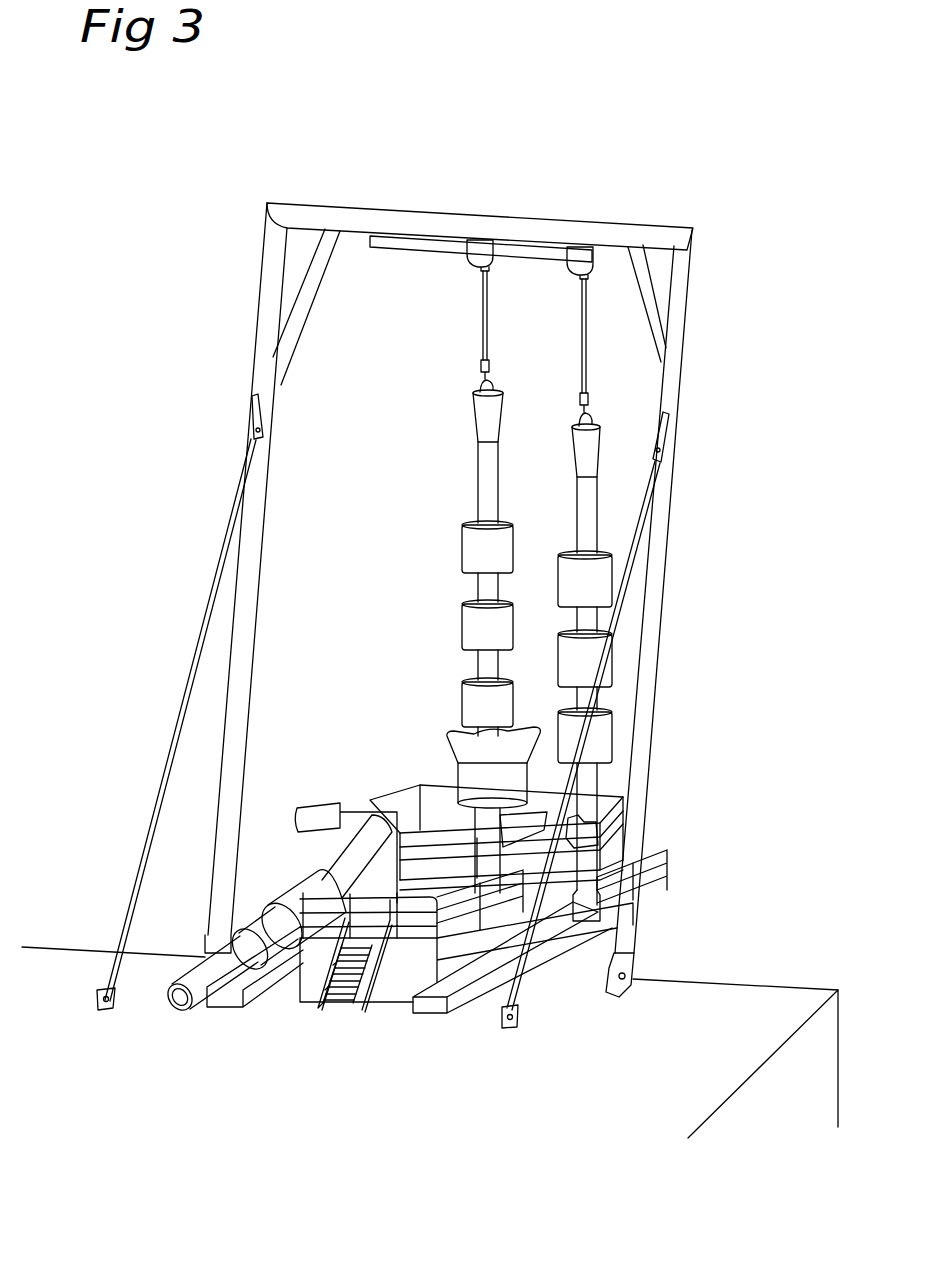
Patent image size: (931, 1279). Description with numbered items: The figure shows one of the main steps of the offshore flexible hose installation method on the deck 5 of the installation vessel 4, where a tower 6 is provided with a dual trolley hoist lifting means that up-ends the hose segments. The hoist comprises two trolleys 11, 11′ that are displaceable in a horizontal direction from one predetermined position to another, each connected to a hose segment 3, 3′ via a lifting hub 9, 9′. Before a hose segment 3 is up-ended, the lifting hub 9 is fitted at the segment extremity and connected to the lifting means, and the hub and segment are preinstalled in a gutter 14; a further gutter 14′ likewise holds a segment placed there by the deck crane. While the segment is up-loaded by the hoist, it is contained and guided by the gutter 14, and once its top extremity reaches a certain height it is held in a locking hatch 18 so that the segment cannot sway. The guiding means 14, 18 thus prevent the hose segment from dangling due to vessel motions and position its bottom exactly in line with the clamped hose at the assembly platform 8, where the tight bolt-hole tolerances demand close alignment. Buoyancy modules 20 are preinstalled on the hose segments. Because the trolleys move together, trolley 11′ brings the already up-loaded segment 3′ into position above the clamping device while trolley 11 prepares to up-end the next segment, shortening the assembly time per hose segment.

The hose segment 3 is at (483, 485).
The new hose segment 3′ is at (580, 524).
The installation vessel 4 is at (822, 980).
The deck 5 is at (743, 997).
The tower 6 is at (333, 222).
The assembly platform 8 is at (670, 895).
The lifting hub 9 is at (483, 391).
The lifting hub 9′ is at (583, 424).
The trolley 11 is at (476, 244).
The trolley 11′ is at (583, 247).
The gutter 14 is at (253, 993).
The gutter 14′ is at (435, 1008).
The locking hatch 18 is at (320, 807).
The buoyancy modules 20 is at (470, 548).